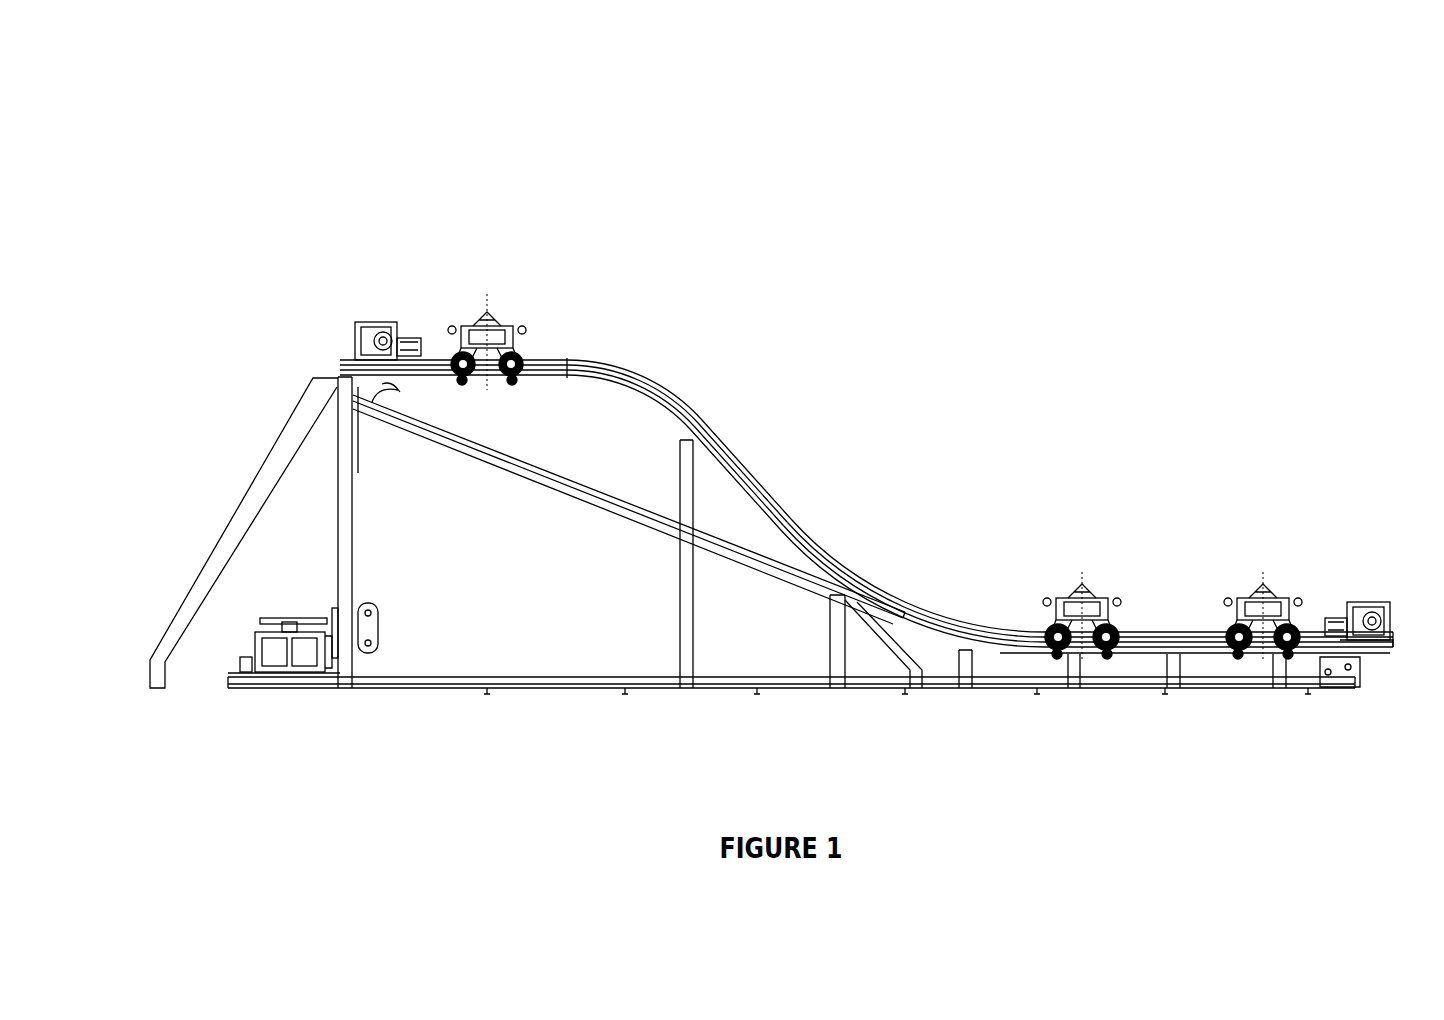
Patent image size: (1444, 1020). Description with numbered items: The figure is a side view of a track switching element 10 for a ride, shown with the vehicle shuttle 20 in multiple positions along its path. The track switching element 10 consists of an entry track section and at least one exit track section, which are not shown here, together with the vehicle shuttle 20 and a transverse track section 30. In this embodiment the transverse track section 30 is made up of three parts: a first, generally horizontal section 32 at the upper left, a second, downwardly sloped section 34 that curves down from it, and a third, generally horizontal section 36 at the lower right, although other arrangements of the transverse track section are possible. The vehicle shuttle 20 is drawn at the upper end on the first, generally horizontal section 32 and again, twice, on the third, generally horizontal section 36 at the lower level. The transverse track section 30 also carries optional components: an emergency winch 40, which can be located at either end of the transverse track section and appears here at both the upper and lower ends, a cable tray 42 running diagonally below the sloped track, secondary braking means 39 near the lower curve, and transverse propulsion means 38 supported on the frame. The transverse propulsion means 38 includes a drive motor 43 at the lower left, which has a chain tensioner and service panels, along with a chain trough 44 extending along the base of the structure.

The track switching element 10 is at (578, 175).
The vehicle shuttle 20 is at (437, 345).
The transverse track section 30 is at (724, 333).
The first, generally horizontal section 32 is at (556, 338).
The second, downwardly sloped section 34 is at (782, 467).
The third, generally horizontal section 36 is at (1158, 654).
The transverse propulsion means 38 is at (408, 703).
The secondary braking means 39 is at (971, 594).
The emergency winch 40 is at (338, 322).
The cable tray 42 is at (631, 473).
The drive motor 43 is at (237, 692).
The chain trough 44 is at (564, 702).